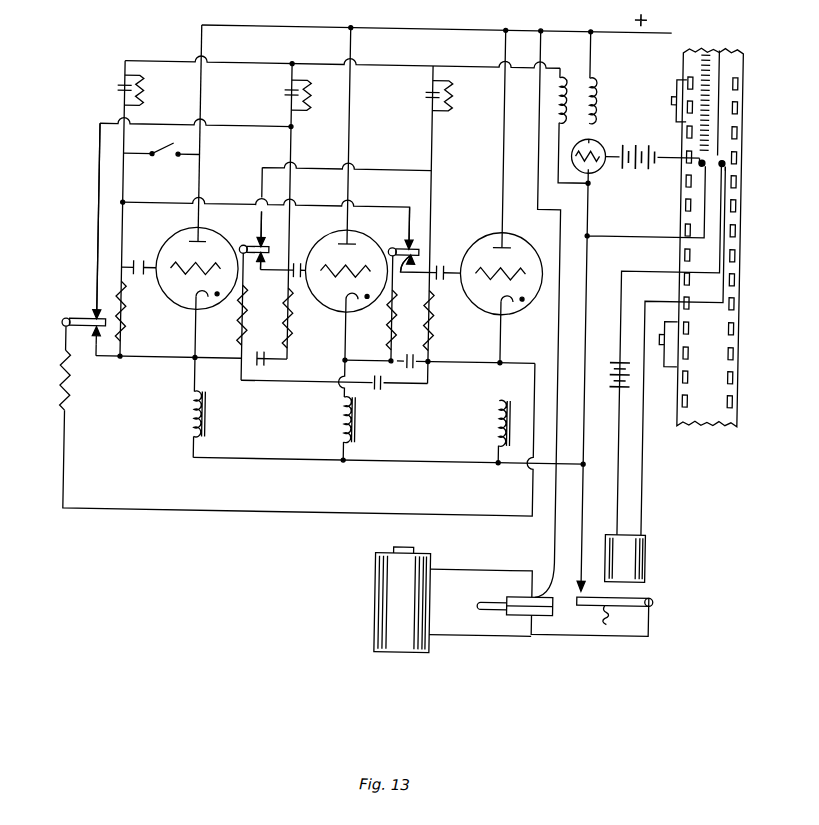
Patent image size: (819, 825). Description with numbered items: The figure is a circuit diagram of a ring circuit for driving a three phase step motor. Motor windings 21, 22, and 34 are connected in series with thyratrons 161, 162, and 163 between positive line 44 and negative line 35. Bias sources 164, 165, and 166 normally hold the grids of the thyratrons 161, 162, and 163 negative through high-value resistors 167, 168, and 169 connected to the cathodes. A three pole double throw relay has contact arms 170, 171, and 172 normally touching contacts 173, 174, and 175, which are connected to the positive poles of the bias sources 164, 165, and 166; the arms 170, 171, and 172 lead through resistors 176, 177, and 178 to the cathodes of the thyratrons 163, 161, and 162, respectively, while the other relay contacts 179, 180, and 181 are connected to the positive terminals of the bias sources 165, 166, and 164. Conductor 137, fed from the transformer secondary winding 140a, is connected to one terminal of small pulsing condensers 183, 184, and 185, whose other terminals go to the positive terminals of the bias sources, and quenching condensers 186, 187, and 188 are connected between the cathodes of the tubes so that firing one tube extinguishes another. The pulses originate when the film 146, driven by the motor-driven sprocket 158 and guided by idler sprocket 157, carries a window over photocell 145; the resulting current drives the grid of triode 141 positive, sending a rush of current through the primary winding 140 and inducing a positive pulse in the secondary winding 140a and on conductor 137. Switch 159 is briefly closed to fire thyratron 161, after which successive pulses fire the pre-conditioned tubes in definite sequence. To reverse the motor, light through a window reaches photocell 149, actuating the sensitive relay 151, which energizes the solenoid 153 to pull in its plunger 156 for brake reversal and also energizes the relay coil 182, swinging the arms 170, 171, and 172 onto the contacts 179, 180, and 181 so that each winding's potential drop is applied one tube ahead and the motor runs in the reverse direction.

The positive line 44 is at (402, 29).
The conductor 137 is at (418, 66).
The negative line 35 is at (285, 462).
The pulsing condenser 183 is at (114, 92).
The pulsing condenser 184 is at (281, 94).
The pulsing condenser 185 is at (425, 96).
The switch 159 is at (168, 160).
The thyratron 161 is at (208, 238).
The thyratron 162 is at (338, 236).
The thyratron 163 is at (487, 237).
The bias source 164 is at (138, 262).
The bias source 165 is at (298, 262).
The bias source 166 is at (440, 267).
The resistor 167 is at (127, 322).
The resistor 168 is at (294, 325).
The resistor 169 is at (434, 332).
The resistor 177 is at (238, 320).
The resistor 178 is at (389, 320).
The resistor 176 is at (62, 386).
The relay arm 171 is at (264, 244).
The relay contact 174 is at (260, 275).
The relay contact 180 is at (248, 240).
The relay contact 181 is at (404, 240).
The relay contact 175 is at (425, 298).
The relay arm 172 is at (418, 250).
The relay contact 179 is at (94, 316).
The relay arm 170 is at (62, 325).
The relay contact 173 is at (94, 345).
The quenching condenser 186 is at (272, 368).
The quenching condenser 187 is at (384, 392).
The quenching condenser 188 is at (414, 370).
The motor winding 21 is at (190, 414).
The motor winding 22 is at (338, 416).
The motor winding 34 is at (495, 416).
The secondary winding 140a is at (559, 76).
The primary winding 140 is at (594, 98).
The triode 141 is at (598, 140).
The photocell 145 is at (697, 159).
The photocell 149 is at (724, 157).
The idler sprocket 157 is at (670, 95).
The motor-driven sprocket 158 is at (670, 362).
The film 146 is at (710, 425).
The relay coil 182 is at (378, 599).
The solenoid 153 is at (524, 595).
The plunger 156 is at (498, 607).
The sensitive relay 151 is at (640, 595).